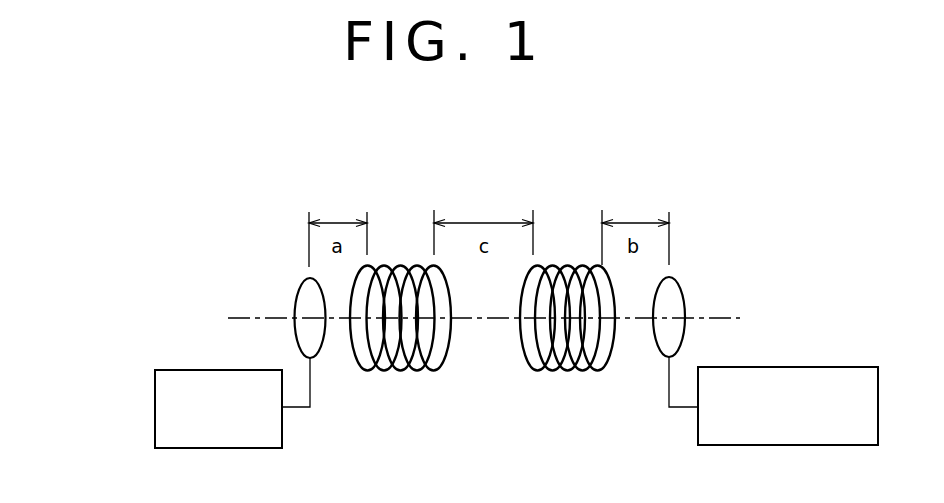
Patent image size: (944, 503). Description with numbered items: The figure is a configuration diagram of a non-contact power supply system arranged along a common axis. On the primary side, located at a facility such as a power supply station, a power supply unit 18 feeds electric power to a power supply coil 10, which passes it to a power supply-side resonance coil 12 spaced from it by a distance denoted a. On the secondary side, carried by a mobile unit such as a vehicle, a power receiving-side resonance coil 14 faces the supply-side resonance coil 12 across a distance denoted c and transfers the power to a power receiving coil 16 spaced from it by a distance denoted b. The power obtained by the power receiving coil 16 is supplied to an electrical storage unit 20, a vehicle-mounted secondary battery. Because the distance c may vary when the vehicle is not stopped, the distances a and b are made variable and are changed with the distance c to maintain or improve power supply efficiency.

The power supply coil 10 is at (305, 288).
The power supply-side resonance coil 12 is at (400, 370).
The power receiving-side resonance coil 14 is at (567, 370).
The power receiving coil 16 is at (676, 288).
The power supply unit 18 is at (183, 370).
The electrical storage unit 20 is at (788, 367).